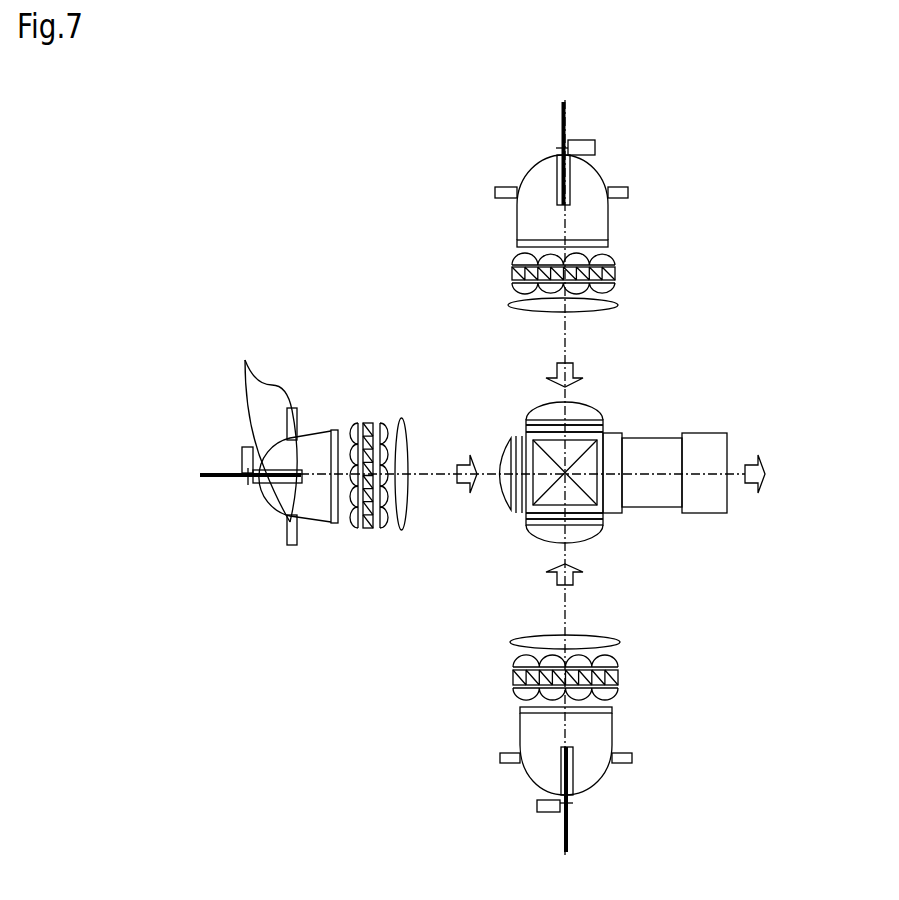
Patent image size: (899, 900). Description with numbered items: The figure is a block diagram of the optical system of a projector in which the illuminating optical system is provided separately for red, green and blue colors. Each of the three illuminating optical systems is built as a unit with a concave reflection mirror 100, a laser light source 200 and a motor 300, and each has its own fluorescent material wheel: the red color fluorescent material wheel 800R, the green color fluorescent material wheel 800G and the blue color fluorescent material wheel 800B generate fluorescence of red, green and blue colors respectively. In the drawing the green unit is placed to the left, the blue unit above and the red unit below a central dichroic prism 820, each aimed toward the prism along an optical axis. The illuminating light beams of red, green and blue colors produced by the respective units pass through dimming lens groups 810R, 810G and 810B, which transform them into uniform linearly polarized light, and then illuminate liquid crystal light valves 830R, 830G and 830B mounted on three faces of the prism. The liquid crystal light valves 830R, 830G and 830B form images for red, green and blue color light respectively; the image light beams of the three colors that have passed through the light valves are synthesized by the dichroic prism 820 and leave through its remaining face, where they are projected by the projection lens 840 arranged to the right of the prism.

The concave reflection mirror 100 is at (313, 523).
The laser light source 200 is at (266, 428).
The motor 300 is at (242, 455).
The green color fluorescent material wheel 800G is at (210, 483).
The blue color fluorescent material wheel 800B is at (566, 113).
The red color fluorescent material wheel 800R is at (566, 822).
The dimming lens group 810G is at (408, 409).
The dimming lens group 810B is at (620, 250).
The dimming lens group 810R is at (510, 635).
The dichroic prism 820 is at (531, 442).
The liquid crystal light valve 830G is at (517, 518).
The liquid crystal light valve 830B is at (526, 428).
The liquid crystal light valve 830R is at (603, 527).
The projection lens 840 is at (700, 433).